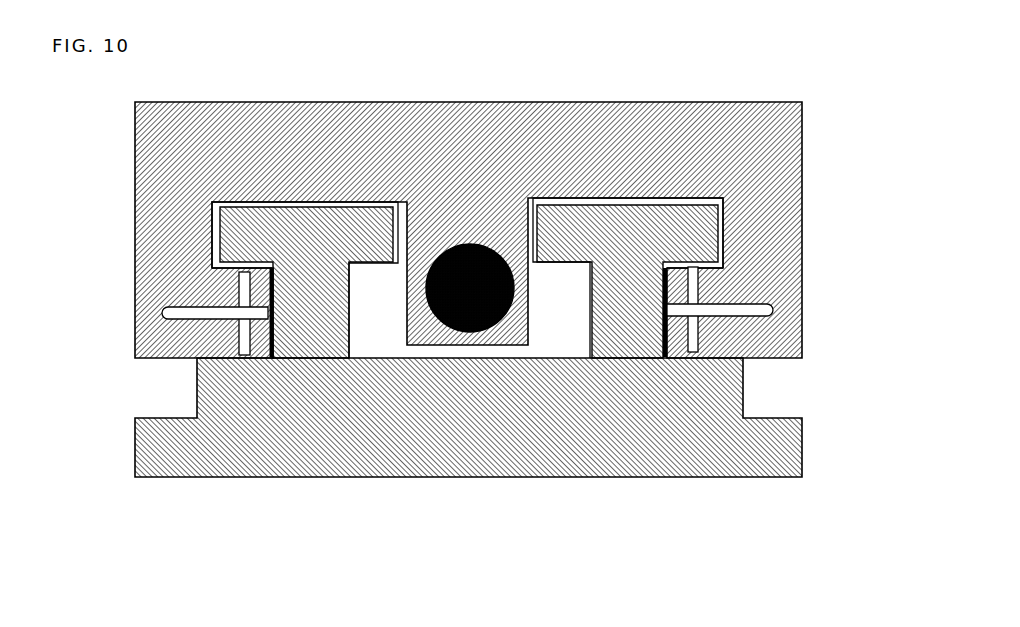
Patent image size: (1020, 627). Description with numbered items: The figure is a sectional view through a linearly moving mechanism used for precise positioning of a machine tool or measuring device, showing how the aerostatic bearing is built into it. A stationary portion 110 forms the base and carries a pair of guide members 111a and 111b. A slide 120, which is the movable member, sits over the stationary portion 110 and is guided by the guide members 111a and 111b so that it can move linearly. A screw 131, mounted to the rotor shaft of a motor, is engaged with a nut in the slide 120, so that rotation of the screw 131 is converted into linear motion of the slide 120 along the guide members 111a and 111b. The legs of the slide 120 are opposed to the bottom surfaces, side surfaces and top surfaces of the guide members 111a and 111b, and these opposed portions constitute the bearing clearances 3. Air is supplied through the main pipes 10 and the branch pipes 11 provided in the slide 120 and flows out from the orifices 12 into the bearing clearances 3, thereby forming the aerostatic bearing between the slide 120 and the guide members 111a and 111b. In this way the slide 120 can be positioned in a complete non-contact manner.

The bearing clearance 3 is at (271, 268).
The main pipe 10 is at (190, 307).
The branch pipe 11 is at (240, 288).
The orifice 12 is at (238, 265).
The stationary portion 110 is at (488, 477).
The guide member 111a is at (343, 312).
The guide member 111b is at (590, 297).
The slide 120 is at (544, 105).
The screw 131 is at (467, 246).